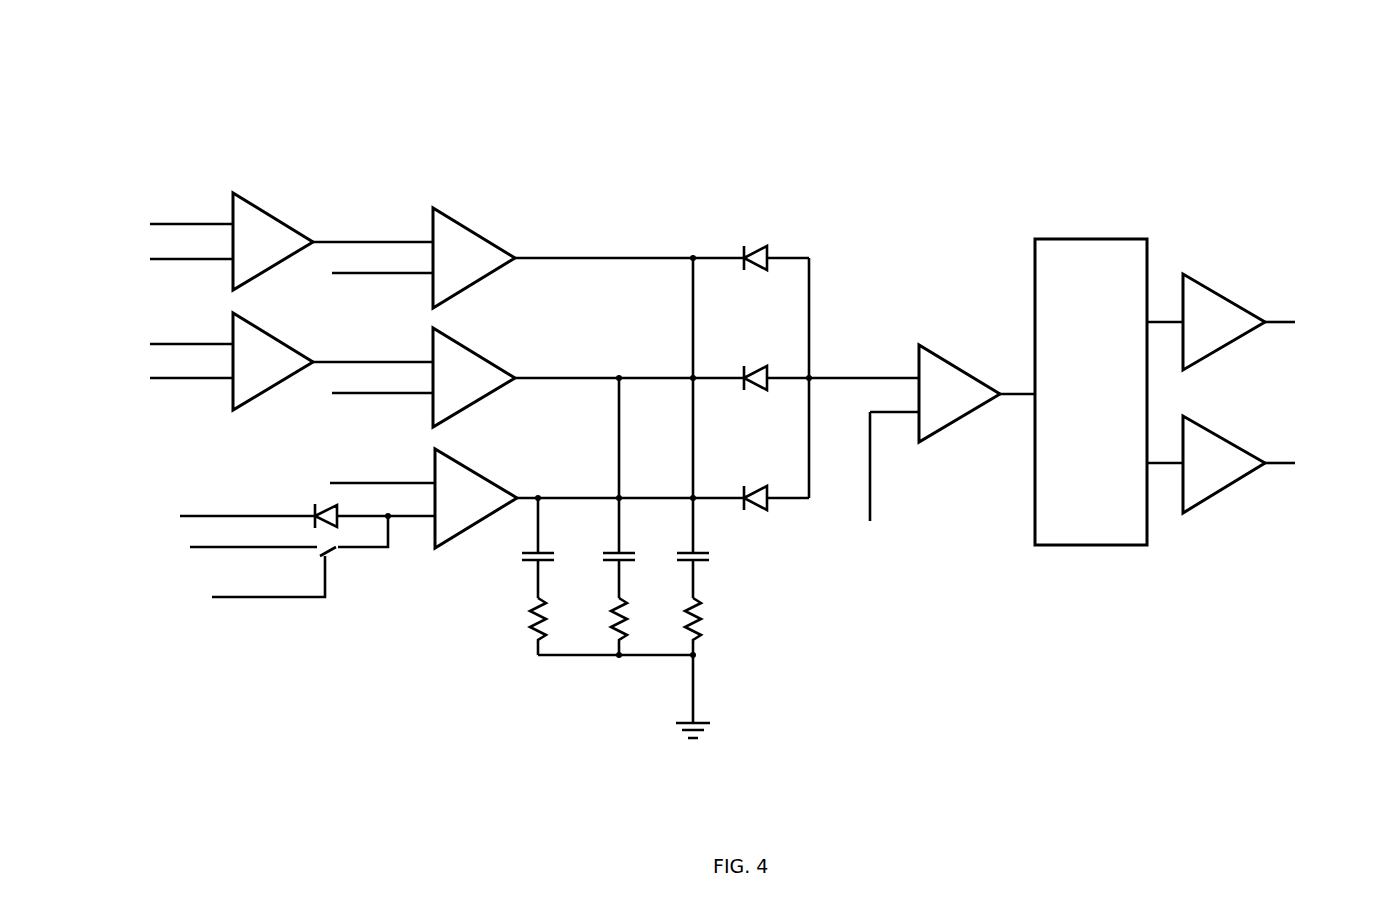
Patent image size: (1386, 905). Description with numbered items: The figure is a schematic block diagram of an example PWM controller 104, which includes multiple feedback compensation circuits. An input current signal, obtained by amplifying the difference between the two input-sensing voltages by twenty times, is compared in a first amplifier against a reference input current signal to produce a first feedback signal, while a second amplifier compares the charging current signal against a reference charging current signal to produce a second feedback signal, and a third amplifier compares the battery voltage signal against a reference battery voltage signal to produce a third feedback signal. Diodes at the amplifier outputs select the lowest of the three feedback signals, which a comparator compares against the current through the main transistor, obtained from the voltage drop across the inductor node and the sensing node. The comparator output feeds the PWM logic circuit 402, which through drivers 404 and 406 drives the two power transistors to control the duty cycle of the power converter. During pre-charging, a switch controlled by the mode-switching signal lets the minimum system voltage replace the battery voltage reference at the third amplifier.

The PWM controller 104 is at (1214, 104).
The PWM logic circuit 402 is at (1091, 392).
The driver 404 is at (1239, 322).
The driver 406 is at (1239, 464).